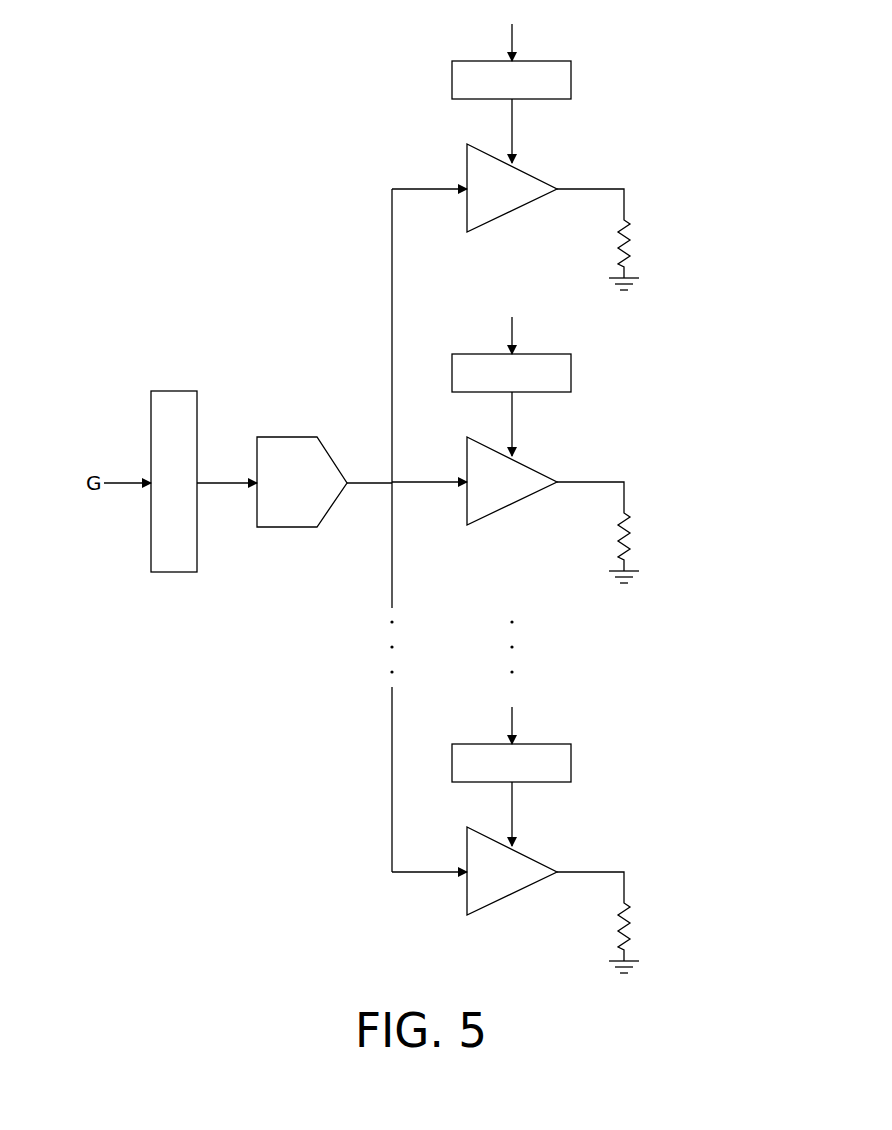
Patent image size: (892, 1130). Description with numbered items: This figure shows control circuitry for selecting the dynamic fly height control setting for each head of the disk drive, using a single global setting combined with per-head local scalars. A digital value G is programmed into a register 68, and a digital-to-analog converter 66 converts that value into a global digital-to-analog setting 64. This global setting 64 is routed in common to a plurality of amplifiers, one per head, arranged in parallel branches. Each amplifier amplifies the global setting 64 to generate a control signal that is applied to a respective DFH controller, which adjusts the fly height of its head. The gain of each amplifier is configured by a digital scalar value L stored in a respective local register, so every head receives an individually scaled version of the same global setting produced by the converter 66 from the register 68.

The global digital-to-analog setting 64 is at (358, 479).
The digital-to-analog converter 66 is at (288, 436).
The register 68 is at (175, 390).